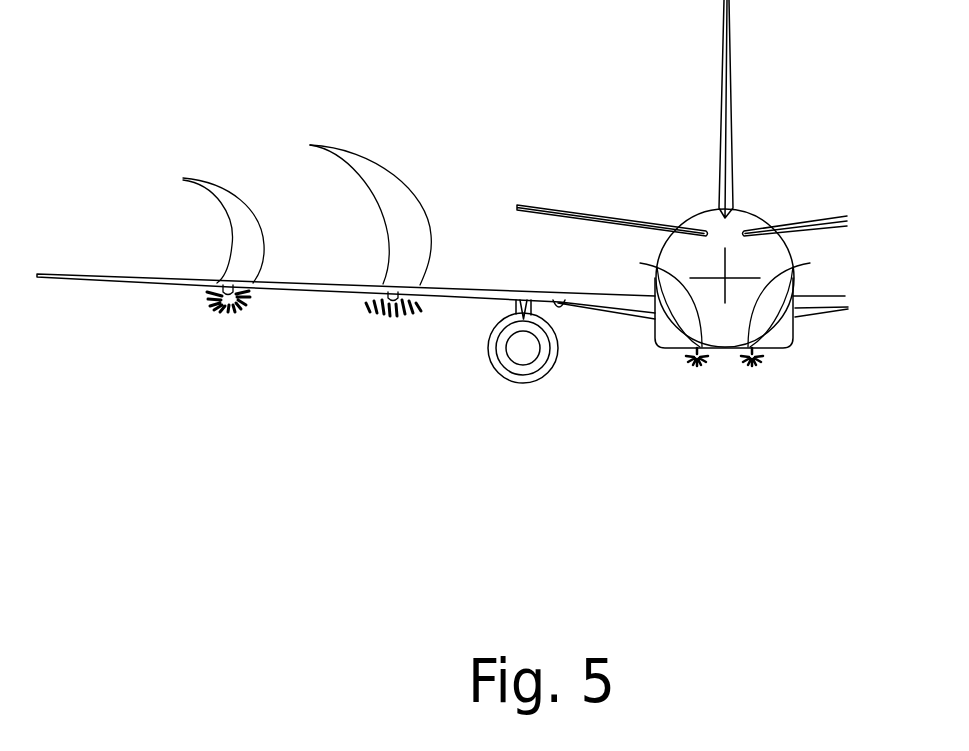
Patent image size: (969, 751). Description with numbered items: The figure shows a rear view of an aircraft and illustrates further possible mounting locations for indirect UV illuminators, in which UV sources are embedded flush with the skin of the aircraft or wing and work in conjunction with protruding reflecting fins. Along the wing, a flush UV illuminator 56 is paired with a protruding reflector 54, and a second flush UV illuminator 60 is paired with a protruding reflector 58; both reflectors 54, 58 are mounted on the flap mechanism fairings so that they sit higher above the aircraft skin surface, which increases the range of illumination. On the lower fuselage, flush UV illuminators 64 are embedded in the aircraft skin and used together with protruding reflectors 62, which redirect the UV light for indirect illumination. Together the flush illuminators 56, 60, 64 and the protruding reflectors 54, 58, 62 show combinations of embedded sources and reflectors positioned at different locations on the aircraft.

The protruding reflector 54 is at (229, 306).
The flush UV illuminator 56 is at (183, 179).
The protruding reflector 58 is at (392, 307).
The flush UV illuminator 60 is at (310, 145).
The protruding reflector 62 is at (697, 364).
The flush UV illuminator 64 is at (810, 263).